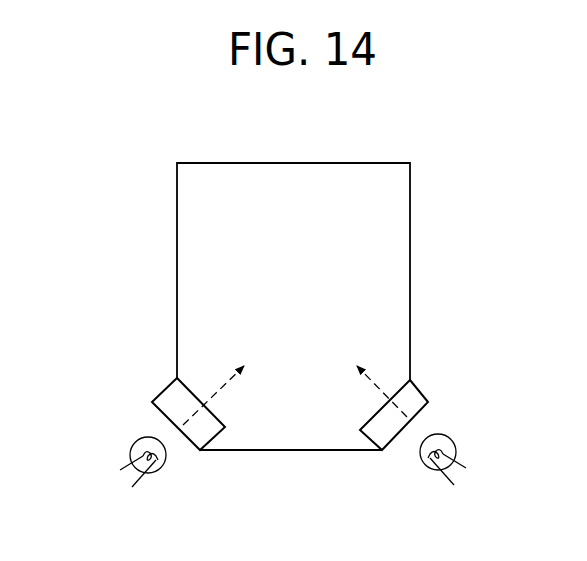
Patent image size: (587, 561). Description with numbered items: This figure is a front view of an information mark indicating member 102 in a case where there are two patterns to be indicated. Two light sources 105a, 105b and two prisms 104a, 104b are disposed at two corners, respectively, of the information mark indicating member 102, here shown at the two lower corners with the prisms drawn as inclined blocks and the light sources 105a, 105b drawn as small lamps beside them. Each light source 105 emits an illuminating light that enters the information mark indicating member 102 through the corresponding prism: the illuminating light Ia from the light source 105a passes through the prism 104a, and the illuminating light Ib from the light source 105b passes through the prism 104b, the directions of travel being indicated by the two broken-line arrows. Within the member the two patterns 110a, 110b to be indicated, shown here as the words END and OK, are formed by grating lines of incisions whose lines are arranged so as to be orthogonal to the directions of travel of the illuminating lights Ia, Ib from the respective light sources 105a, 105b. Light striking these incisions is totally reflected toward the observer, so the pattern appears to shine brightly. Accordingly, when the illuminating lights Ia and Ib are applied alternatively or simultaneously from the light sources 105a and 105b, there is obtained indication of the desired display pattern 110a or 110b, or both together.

The information mark indicating member 102 is at (351, 178).
The light source 105 is at (240, 332).
The pattern to be indicated 110a is at (227, 341).
The pattern to be indicated 110b is at (368, 331).
The prism 104a is at (160, 388).
The prism 104b is at (427, 398).
The light source 105a is at (162, 467).
The light source 105b is at (423, 465).
The illuminating light Ia is at (217, 393).
The illuminating light Ib is at (377, 387).